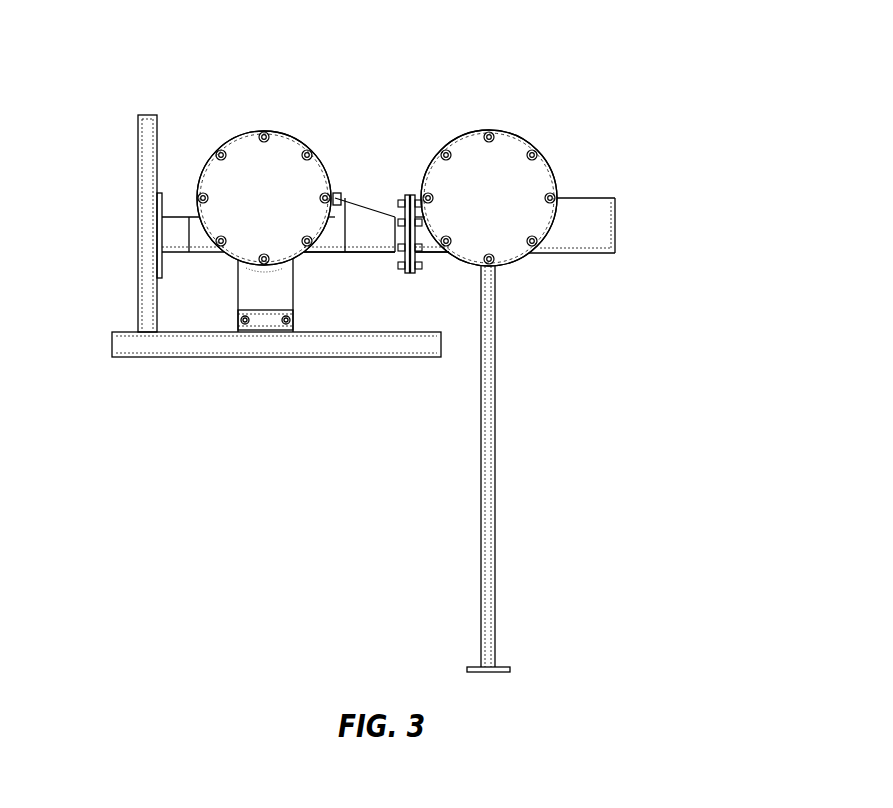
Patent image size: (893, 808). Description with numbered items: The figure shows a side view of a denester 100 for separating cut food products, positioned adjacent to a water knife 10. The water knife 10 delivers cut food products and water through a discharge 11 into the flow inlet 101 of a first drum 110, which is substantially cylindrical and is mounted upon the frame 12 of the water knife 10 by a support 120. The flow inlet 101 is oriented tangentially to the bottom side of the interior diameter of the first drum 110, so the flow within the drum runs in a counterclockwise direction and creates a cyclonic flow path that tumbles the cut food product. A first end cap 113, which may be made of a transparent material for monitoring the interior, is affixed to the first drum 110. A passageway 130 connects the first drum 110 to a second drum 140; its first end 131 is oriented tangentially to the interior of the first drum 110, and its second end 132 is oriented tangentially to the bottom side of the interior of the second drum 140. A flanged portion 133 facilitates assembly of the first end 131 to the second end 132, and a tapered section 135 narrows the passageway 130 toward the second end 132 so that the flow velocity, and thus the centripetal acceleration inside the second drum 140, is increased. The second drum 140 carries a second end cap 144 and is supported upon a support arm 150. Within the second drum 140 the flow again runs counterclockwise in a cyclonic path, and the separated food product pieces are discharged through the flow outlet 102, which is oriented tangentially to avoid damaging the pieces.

The denester 100 is at (643, 69).
The water knife 10 is at (137, 140).
The discharge 11 is at (176, 218).
The frame 12 is at (350, 362).
The flow inlet 101 is at (205, 255).
The flow outlet 102 is at (592, 203).
The first drum 110 is at (233, 148).
The first end cap 113 is at (264, 198).
The support 120 is at (247, 293).
The passageway 130 is at (354, 168).
The first end 131 is at (333, 246).
The second end 132 is at (430, 251).
The flanged portion 133 is at (402, 268).
The tapered section 135 is at (378, 217).
The second drum 140 is at (520, 147).
The second end cap 144 is at (489, 198).
The support arm 150 is at (502, 382).